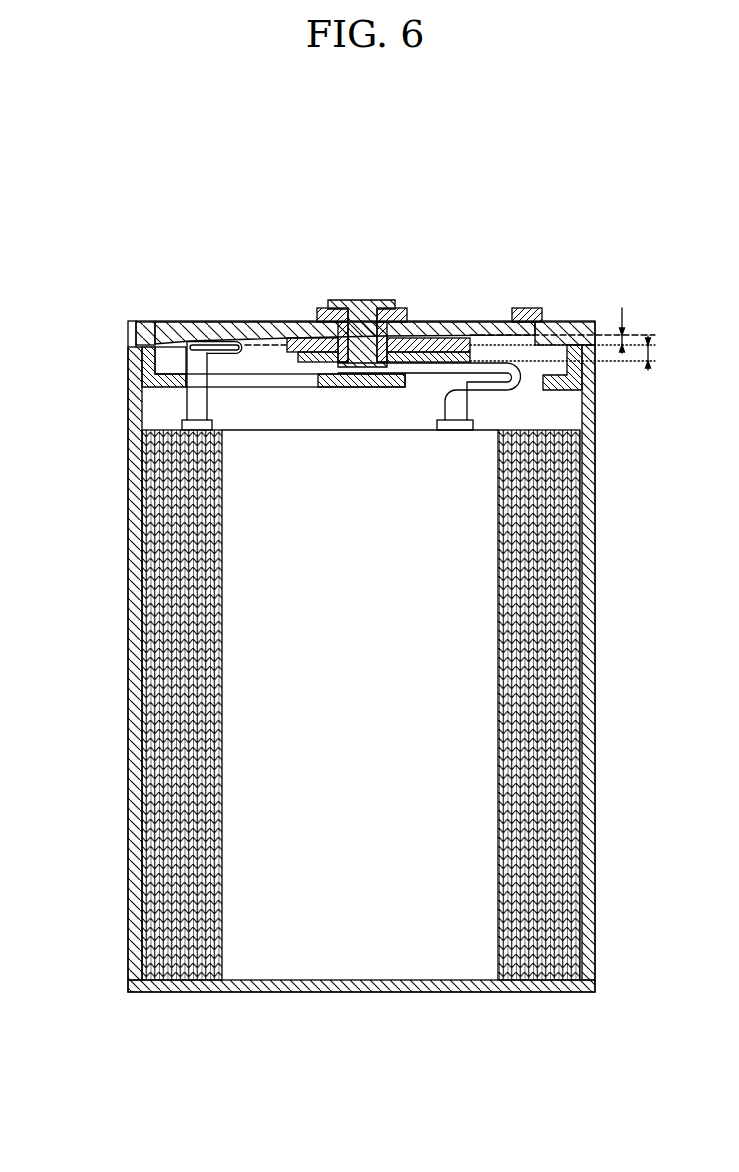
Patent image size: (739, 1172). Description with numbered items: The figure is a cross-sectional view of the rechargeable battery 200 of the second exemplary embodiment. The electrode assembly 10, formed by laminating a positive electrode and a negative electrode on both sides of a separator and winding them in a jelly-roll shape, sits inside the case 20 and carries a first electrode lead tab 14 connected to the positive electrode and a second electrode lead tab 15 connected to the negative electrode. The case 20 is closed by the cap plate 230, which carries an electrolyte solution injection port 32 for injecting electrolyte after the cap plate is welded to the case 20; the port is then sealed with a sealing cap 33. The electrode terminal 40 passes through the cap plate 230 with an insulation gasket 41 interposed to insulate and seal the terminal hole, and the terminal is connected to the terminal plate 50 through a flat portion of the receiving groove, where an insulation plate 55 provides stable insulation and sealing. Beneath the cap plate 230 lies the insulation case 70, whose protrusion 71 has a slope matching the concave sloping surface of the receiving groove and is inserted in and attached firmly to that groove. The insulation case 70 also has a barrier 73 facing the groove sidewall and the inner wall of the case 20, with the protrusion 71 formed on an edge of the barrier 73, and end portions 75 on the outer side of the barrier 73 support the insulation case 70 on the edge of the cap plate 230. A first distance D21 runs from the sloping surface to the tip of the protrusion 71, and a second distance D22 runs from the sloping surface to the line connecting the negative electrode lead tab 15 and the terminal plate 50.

The rechargeable battery 200 is at (389, 184).
The electrode assembly 10 is at (152, 595).
The first electrode lead tab 14 is at (197, 409).
The second electrode lead tab 15 is at (497, 391).
The case 20 is at (597, 789).
The cap plate 230 is at (150, 321).
The electrolyte solution injection port 32 is at (551, 340).
The sealing cap 33 is at (527, 308).
The electrode terminal 40 is at (359, 308).
The insulation gasket 41 is at (321, 308).
The terminal plate 50 is at (423, 360).
The insulation plate 55 is at (296, 342).
The insulation case 70 is at (558, 392).
The protrusion 71 is at (261, 340).
The barrier 73 is at (173, 367).
The end portions 75 is at (153, 330).
The first distance D21 is at (569, 329).
The second distance D22 is at (583, 353).